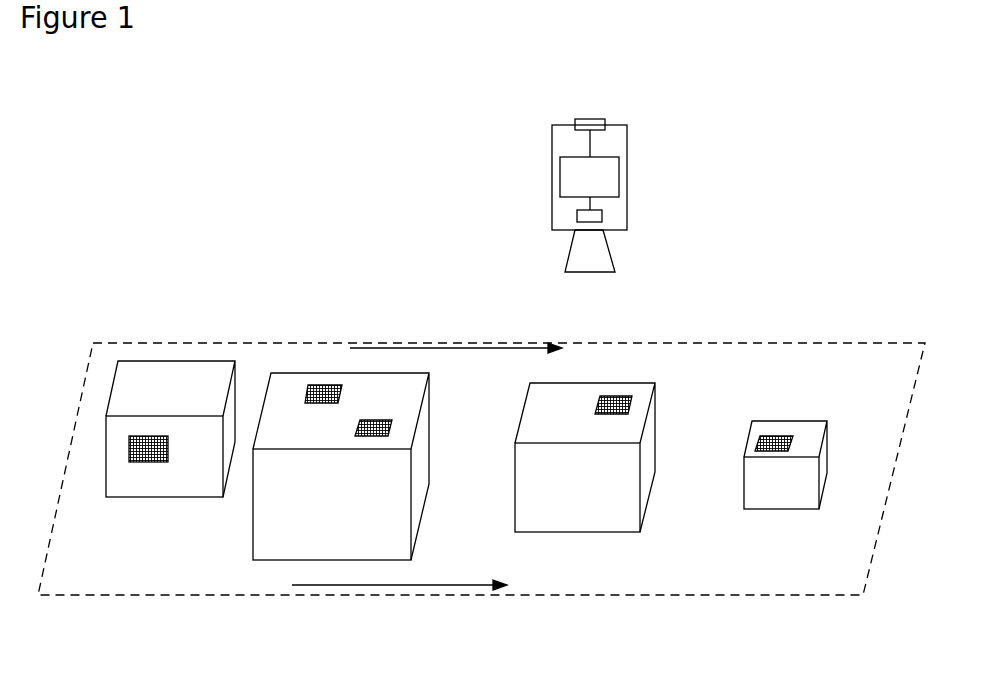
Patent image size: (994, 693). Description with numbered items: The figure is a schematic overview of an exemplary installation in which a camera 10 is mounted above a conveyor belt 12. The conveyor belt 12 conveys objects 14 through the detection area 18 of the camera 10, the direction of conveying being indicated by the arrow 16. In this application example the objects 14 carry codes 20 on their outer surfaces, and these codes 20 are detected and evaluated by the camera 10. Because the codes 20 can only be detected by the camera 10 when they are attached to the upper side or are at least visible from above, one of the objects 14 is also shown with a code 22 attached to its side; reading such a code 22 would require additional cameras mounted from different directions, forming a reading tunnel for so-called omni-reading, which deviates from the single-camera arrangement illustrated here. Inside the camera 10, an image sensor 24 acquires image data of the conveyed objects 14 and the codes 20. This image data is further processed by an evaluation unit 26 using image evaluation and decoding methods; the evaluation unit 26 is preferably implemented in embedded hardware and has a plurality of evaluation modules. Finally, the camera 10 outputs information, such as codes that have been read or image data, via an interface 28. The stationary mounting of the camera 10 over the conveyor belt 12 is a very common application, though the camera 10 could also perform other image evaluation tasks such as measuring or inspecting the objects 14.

The camera 10 is at (589, 170).
The conveyor belt 12 is at (830, 597).
The objects 14 is at (268, 537).
The arrow 16 is at (377, 587).
The detection area 18 is at (627, 332).
The codes 20 is at (368, 420).
The code 22 is at (140, 450).
The image sensor 24 is at (580, 222).
The evaluation unit 26 is at (613, 200).
The interface 28 is at (578, 120).